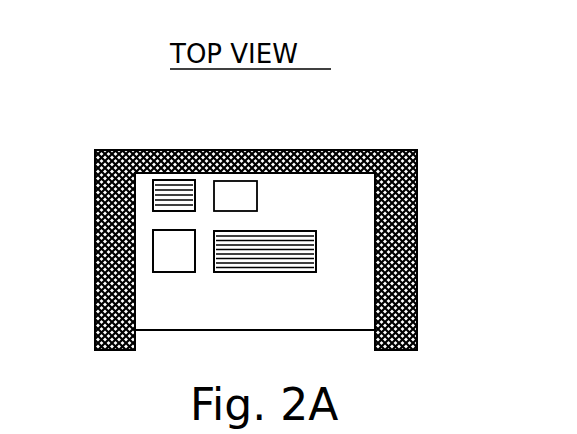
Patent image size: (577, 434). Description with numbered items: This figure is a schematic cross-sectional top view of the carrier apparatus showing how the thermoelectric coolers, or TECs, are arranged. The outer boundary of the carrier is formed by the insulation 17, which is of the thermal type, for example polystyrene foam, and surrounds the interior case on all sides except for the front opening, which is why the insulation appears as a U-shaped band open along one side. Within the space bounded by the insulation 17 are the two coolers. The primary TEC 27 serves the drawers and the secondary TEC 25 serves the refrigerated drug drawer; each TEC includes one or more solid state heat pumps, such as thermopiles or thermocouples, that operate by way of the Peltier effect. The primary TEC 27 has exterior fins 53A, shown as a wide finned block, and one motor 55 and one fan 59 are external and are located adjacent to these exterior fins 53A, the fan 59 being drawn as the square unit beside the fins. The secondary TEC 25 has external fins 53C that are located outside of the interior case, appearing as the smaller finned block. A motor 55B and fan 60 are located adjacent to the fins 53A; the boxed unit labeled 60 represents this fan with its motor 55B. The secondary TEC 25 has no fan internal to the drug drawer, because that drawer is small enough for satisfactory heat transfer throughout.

The insulation 17 is at (425, 240).
The secondary TEC 25 is at (161, 176).
The external fins 53C is at (204, 176).
The motor 55B is at (288, 196).
The fan 60 is at (235, 197).
The exterior fan 59 is at (160, 281).
The motor 55 is at (183, 281).
The exterior fins 53A is at (292, 277).
The primary TEC 27 is at (274, 282).